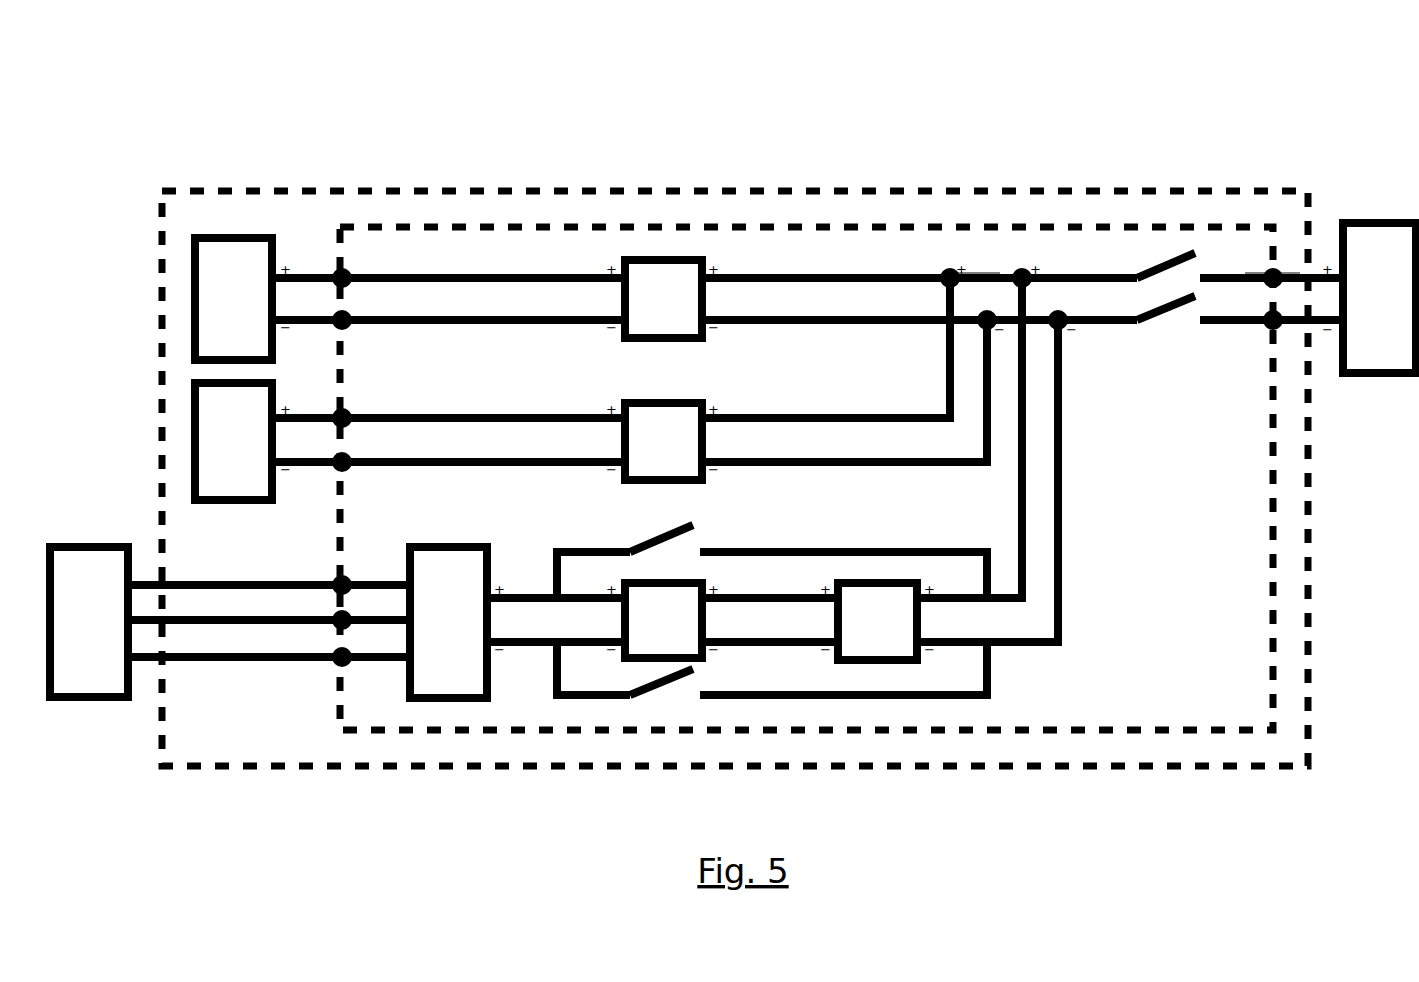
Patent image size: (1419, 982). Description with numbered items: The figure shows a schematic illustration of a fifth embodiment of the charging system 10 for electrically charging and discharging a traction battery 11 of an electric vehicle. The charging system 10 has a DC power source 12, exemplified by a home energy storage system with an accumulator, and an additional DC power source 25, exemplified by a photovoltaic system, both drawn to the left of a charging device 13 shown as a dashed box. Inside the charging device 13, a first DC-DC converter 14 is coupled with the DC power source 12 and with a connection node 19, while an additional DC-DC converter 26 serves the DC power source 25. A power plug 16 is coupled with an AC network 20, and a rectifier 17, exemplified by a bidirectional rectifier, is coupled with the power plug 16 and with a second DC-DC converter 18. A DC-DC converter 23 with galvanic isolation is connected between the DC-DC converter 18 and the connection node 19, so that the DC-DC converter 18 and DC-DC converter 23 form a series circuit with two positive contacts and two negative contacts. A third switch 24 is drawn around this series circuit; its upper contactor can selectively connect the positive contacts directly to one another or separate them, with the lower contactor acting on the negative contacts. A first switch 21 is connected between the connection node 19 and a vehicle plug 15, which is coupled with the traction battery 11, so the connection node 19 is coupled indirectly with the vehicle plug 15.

The charging system 10 is at (735, 478).
The traction battery 11 is at (1308, 298).
The DC power source 12 is at (410, 299).
The charging device 13 is at (806, 478).
The first DC-DC converter 14 is at (881, 299).
The vehicle plug 15 is at (1255, 252).
The power plug 16 is at (357, 563).
The rectifier 17 is at (517, 622).
The second DC-DC converter 18 is at (731, 620).
The connection node 19 is at (993, 262).
The AC network 20 is at (230, 622).
The first switch 21 is at (1155, 305).
The DC-DC converter with galvanic isolation 23 is at (948, 469).
The third switch 24 is at (652, 685).
The additional DC power source 25 is at (410, 441).
The additional DC-DC converter 26 is at (806, 379).